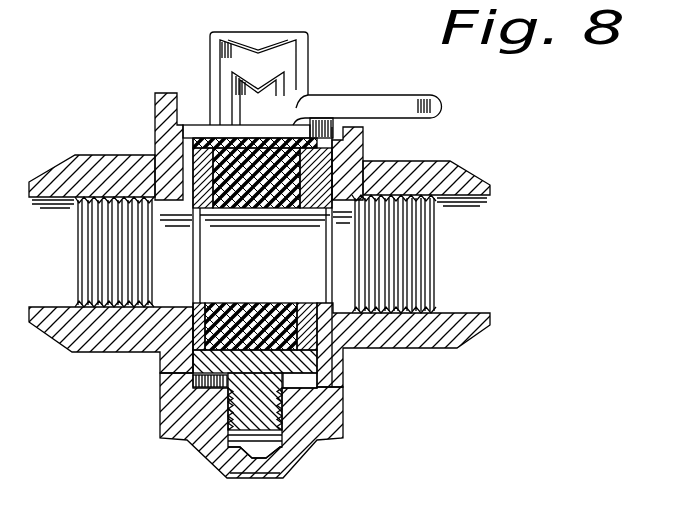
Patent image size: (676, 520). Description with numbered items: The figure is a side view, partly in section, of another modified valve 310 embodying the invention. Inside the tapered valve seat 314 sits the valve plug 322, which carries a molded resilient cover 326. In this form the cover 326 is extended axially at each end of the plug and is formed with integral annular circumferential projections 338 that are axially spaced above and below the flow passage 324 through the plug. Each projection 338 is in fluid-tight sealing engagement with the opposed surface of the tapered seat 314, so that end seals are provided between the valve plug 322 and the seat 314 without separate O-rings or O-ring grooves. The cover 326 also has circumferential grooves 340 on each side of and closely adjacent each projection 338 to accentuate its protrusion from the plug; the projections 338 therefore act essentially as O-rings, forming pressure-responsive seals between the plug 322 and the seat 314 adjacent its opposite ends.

The valve 310 is at (449, 150).
The tapered valve seat 314 is at (346, 388).
The valve plug 322 is at (318, 132).
The flow passage 324 is at (208, 275).
The molded resilient cover 326 is at (363, 157).
The annular circumferential projections 338 is at (358, 141).
The circumferential grooves 340 is at (192, 178).